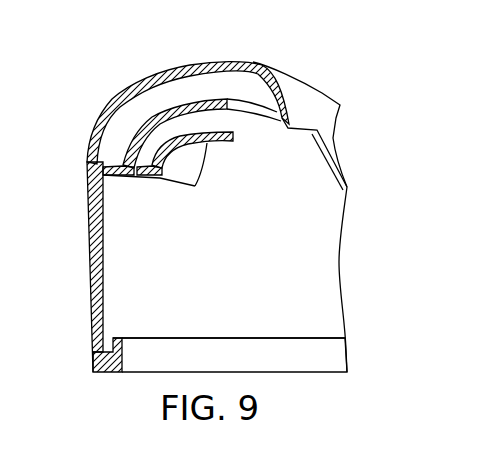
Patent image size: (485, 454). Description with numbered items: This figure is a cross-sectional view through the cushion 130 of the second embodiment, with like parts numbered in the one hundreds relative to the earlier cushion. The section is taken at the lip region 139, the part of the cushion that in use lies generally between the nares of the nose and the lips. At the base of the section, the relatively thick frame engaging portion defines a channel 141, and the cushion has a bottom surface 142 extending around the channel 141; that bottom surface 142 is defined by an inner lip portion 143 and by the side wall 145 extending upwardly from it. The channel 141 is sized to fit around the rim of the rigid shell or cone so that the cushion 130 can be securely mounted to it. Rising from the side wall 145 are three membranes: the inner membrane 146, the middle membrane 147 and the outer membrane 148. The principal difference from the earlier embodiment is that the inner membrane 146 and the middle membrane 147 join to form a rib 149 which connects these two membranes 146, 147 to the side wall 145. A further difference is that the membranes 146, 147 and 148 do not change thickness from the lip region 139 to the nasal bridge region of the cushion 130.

The cushion 130 is at (366, 190).
The lip region 139 is at (357, 347).
The channel 141 is at (100, 350).
The bottom surface 142 is at (97, 374).
The inner lip portion 143 is at (236, 338).
The side wall 145 is at (302, 245).
The inner membrane 146 is at (234, 138).
The middle membrane 147 is at (168, 107).
The outer membrane 148 is at (231, 63).
The rib 149 is at (107, 177).